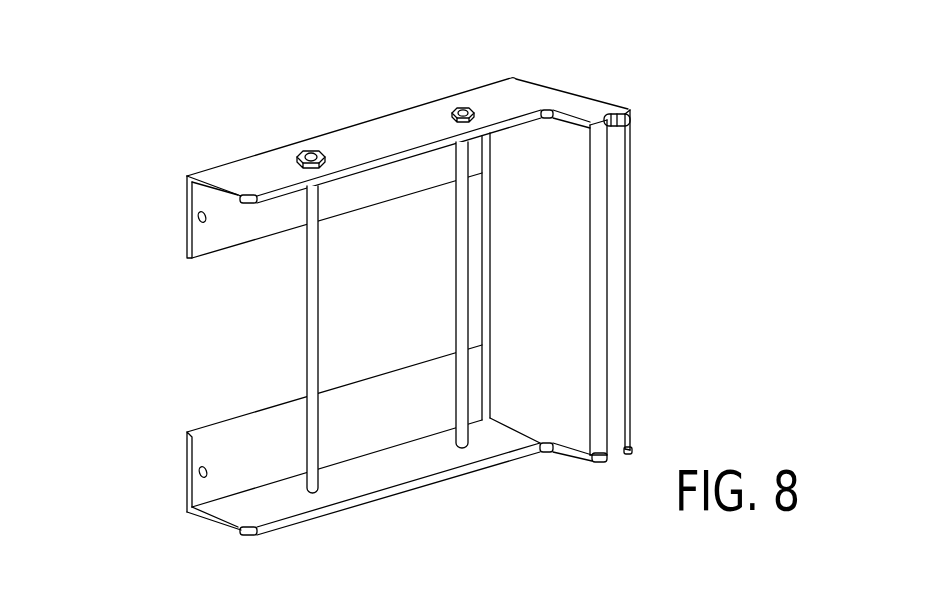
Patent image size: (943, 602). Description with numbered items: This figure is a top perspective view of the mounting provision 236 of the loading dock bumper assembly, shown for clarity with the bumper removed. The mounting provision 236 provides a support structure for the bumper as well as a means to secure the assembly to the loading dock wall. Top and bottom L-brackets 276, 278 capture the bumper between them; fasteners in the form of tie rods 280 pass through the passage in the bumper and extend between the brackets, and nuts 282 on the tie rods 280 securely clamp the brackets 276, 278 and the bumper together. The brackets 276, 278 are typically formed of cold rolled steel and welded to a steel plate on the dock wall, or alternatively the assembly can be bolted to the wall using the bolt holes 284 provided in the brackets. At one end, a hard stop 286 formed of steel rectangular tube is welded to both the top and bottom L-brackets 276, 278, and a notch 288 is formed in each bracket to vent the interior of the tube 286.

The mounting provision 236 is at (388, 283).
The top L-bracket 276 is at (405, 123).
The bottom L-bracket 278 is at (243, 440).
The tie rod 280 is at (307, 305).
The nut 282 is at (303, 152).
The bolt hole 284 is at (200, 216).
The hard stop 286 is at (615, 260).
The notch 288 is at (607, 107).